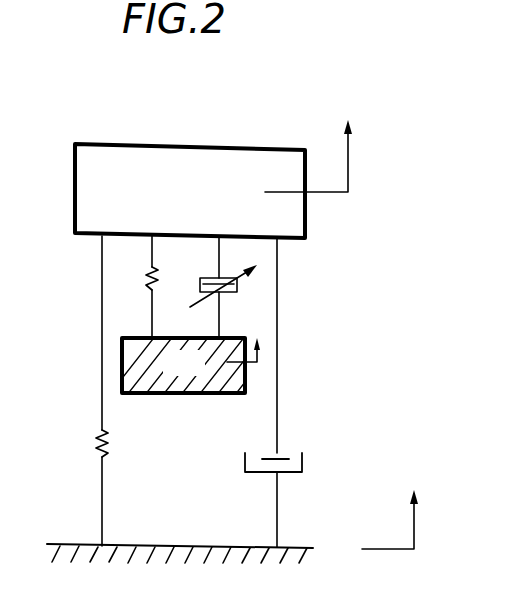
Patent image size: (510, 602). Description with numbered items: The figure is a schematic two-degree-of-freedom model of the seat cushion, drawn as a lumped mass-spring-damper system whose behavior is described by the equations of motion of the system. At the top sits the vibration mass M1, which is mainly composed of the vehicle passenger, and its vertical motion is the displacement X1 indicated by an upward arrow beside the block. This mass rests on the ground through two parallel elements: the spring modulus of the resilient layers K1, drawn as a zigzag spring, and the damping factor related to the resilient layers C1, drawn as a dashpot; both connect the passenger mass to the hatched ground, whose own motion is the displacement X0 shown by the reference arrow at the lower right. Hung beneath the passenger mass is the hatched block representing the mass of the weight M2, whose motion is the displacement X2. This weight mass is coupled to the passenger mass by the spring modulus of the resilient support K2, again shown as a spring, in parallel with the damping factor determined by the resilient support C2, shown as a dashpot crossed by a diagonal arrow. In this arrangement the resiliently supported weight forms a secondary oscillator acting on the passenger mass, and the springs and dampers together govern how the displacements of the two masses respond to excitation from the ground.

The vibration mass M1 is at (190, 191).
The mass of the weight M2 is at (195, 365).
The spring modulus of the resilient layers K1 is at (117, 445).
The spring modulus of the resilient support K2 is at (164, 273).
The damping factor related to the resilient layers C1 is at (277, 479).
The damping factor determined by the resilient support C2 is at (223, 295).
The displacement X1 is at (312, 142).
The displacement X2 is at (249, 368).
The displacement X0 is at (393, 509).